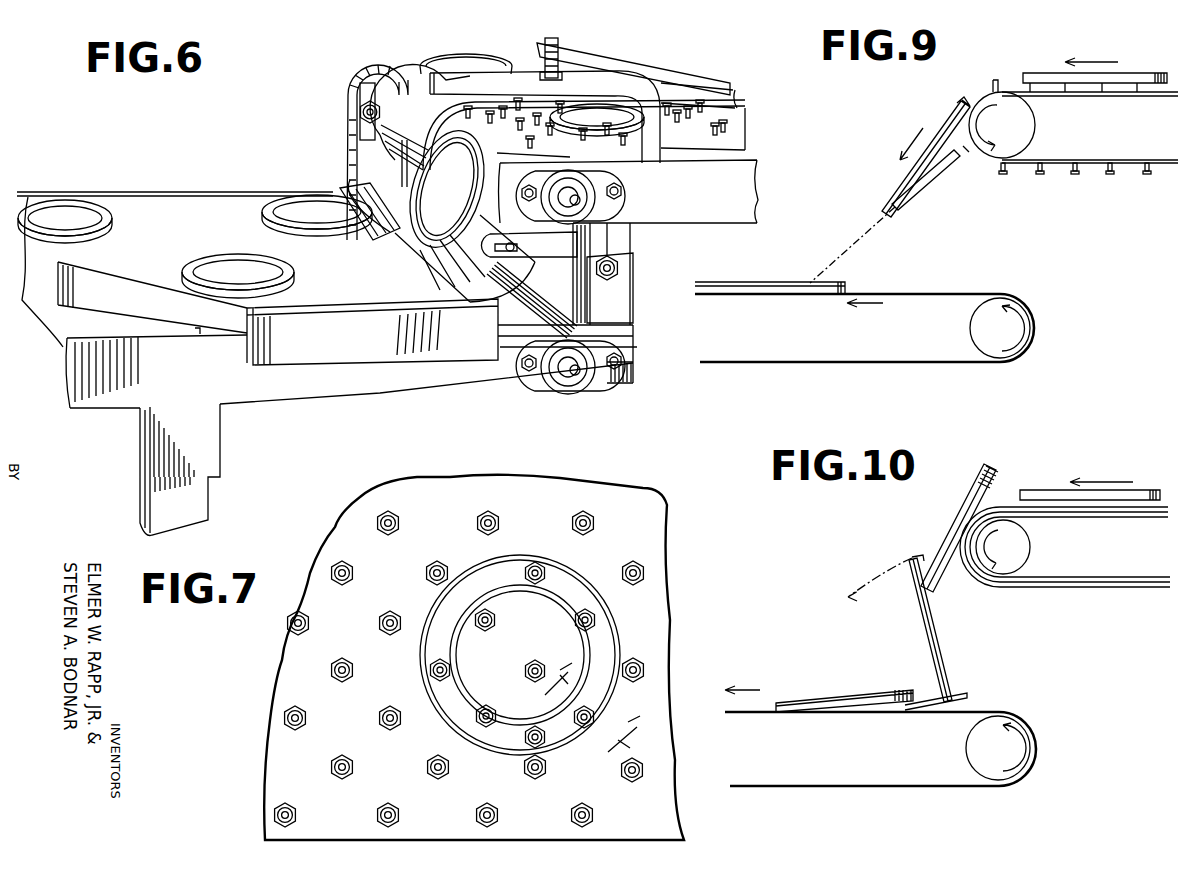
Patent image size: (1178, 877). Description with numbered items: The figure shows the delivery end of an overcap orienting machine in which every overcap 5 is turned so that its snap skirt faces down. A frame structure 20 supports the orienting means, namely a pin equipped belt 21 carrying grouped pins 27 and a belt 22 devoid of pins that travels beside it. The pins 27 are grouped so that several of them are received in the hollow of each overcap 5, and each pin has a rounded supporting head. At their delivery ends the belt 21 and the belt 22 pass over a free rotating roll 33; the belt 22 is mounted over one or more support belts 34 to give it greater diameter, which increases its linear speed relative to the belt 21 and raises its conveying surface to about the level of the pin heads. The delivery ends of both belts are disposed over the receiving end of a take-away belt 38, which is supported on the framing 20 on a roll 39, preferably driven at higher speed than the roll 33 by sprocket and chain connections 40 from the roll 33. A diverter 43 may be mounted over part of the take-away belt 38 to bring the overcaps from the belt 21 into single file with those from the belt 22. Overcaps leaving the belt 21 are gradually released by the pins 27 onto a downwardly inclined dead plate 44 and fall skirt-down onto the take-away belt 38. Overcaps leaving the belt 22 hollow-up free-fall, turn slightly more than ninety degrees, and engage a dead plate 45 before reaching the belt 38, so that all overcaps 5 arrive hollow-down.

In FIG. 6, the overcap 5 is at (57, 208).
In FIG. 7, the overcap 5 is at (634, 633).
In FIG. 9, the overcap 5 is at (947, 113).
In FIG. 10, the overcap 5 is at (1107, 500).
In FIG. 6, the frame structure 20 is at (682, 210).
In FIG. 6, the pin equipped belt 21 is at (733, 140).
In FIG. 7, the pin equipped belt 21 is at (655, 532).
In FIG. 9, the pin equipped belt 21 is at (1133, 167).
In FIG. 6, the belt devoid of pins 22 is at (407, 90).
In FIG. 10, the belt devoid of pins 22 is at (1133, 593).
In FIG. 6, the pins 27 is at (708, 118).
In FIG. 7, the pins 27 is at (460, 523).
In FIG. 9, the pins 27 is at (1070, 168).
In FIG. 9, the free rotating roll 33 is at (997, 158).
In FIG. 10, the free rotating roll 33 is at (1007, 522).
In FIG. 10, the support belt 34 is at (1153, 583).
In FIG. 6, the take-away belt 38 is at (163, 217).
In FIG. 9, the take-away belt 38 is at (925, 295).
In FIG. 10, the take-away belt 38 is at (893, 715).
In FIG. 9, the roll or pulley 39 is at (1027, 335).
In FIG. 10, the roll or pulley 39 is at (1025, 765).
In FIG. 6, the sprocket and chain connections 40 is at (350, 143).
In FIG. 6, the diverter 43 is at (72, 300).
In FIG. 6, the downwardly inclined dead plate 44 is at (430, 260).
In FIG. 9, the downwardly inclined dead plate 44 is at (913, 200).
In FIG. 6, the dead plate 45 is at (370, 232).
In FIG. 10, the dead plate 45 is at (967, 696).